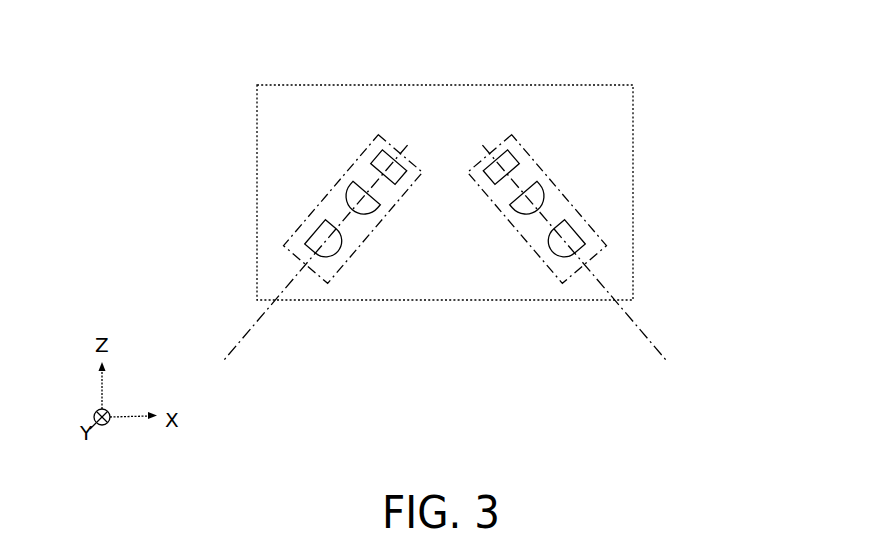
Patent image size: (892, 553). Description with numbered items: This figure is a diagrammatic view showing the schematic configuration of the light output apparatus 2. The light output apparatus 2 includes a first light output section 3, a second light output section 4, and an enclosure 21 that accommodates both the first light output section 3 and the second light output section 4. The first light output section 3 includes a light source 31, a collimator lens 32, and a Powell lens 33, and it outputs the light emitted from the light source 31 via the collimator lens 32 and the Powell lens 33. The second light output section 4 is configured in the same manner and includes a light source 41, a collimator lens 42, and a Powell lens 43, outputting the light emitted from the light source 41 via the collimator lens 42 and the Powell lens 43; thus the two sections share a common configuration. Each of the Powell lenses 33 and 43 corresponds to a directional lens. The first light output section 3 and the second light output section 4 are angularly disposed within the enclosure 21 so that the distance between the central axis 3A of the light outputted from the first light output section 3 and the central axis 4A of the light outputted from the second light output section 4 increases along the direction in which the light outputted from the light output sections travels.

The light output apparatus 2 is at (676, 80).
The enclosure 21 is at (447, 85).
The first light output section 3 is at (270, 252).
The light source 31 is at (372, 161).
The collimator lens 32 is at (353, 184).
The Powell lens 33 is at (332, 222).
The central axis 3A is at (247, 331).
The second light output section 4 is at (620, 252).
The light source 41 is at (518, 161).
The collimator lens 42 is at (537, 184).
The Powell lens 43 is at (558, 222).
The central axis 4A is at (643, 331).